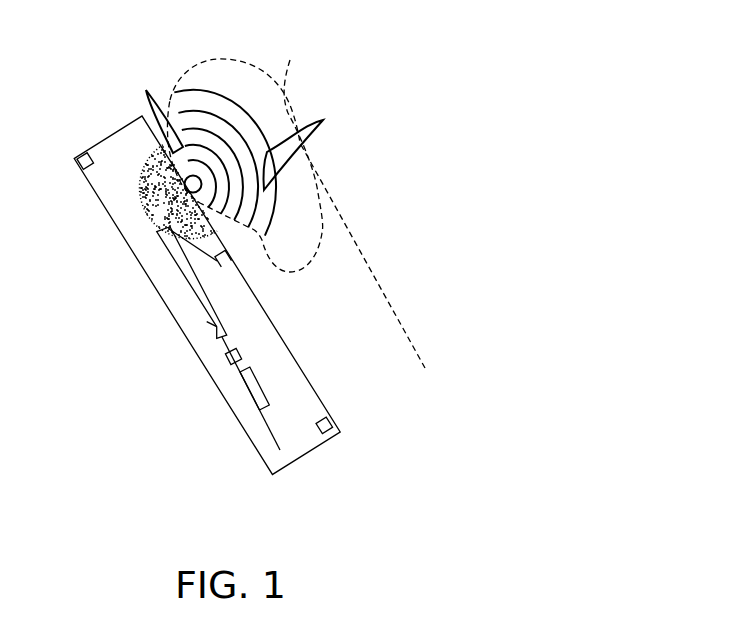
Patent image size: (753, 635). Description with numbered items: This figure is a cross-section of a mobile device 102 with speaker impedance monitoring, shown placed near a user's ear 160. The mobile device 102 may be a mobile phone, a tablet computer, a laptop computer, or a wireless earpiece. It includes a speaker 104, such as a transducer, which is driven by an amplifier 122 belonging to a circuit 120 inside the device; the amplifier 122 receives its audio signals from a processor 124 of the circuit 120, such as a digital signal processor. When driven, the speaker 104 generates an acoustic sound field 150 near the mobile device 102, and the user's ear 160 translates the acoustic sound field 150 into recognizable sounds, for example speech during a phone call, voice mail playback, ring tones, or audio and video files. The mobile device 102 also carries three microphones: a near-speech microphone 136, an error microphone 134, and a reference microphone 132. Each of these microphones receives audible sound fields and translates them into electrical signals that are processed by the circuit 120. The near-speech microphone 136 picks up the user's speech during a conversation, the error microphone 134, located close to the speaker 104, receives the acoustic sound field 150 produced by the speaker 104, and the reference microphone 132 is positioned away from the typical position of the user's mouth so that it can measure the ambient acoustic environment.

The mobile device 102 is at (98, 199).
The speaker 104 is at (150, 206).
The circuit 120 is at (242, 372).
The amplifier 122 is at (241, 358).
The processor 124 is at (254, 392).
The reference microphone 132 is at (85, 151).
The error microphone 134 is at (216, 262).
The near-speech microphone 136 is at (333, 423).
The acoustic sound field 150 is at (149, 92).
The user's ear 160 is at (240, 68).